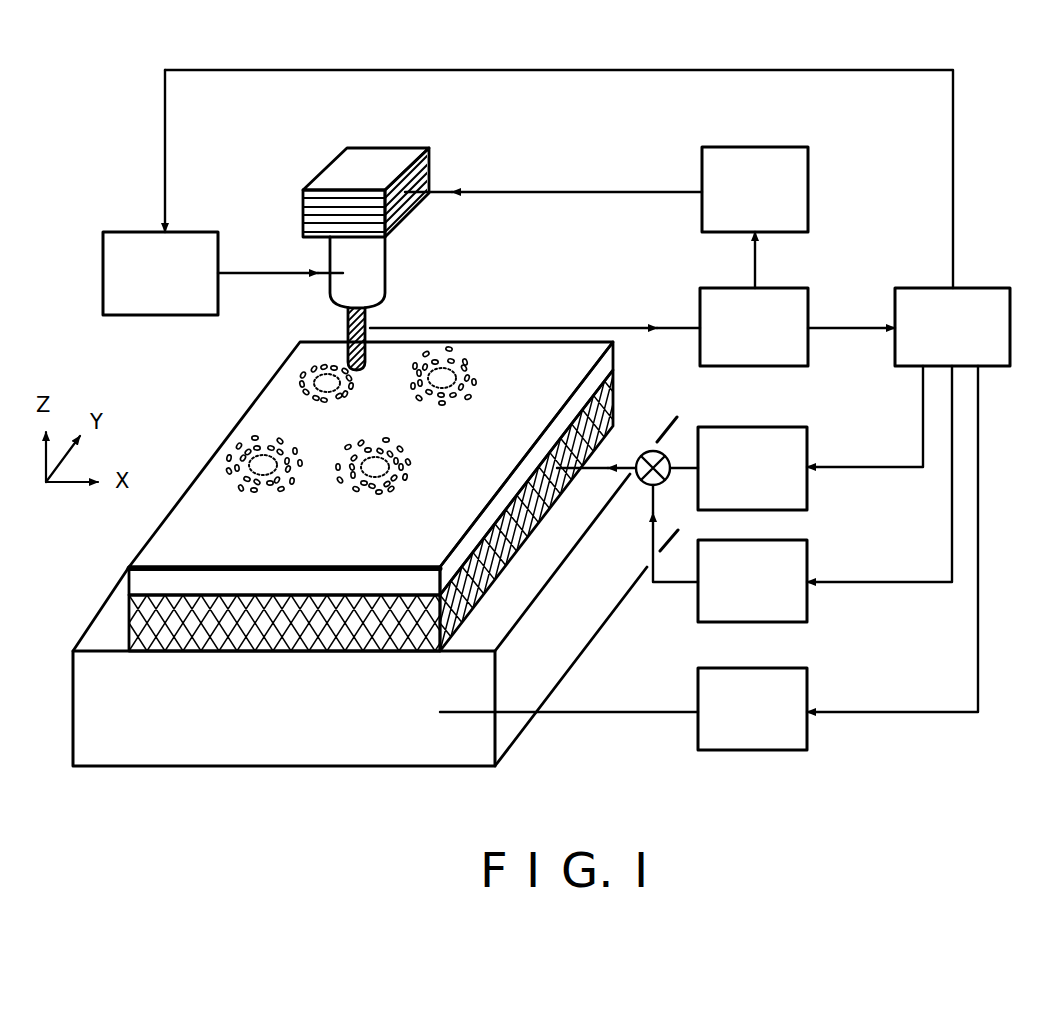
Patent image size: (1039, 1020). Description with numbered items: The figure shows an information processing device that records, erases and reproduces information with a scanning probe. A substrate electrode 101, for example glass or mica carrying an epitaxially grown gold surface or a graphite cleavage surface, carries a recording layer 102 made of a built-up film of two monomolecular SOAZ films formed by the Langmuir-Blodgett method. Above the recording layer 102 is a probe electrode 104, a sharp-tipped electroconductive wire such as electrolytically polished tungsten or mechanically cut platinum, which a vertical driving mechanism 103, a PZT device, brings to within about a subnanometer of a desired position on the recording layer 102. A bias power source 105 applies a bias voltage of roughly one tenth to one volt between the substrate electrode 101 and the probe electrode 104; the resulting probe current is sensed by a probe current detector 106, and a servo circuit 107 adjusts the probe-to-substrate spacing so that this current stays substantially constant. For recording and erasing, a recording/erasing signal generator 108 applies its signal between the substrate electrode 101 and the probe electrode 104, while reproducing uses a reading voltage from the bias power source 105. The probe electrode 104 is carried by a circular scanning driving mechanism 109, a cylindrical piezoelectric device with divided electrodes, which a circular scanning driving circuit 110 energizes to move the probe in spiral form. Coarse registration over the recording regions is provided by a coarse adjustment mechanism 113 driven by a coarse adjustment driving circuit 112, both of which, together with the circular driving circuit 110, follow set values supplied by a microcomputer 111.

The substrate electrode 101 is at (127, 618).
The recording layer 102 is at (127, 582).
The vertical driving mechanism 103 is at (428, 153).
The probe electrode 104 is at (379, 316).
The bias power source 105 is at (748, 427).
The probe current detector 106 is at (775, 288).
The servo circuit 107 is at (757, 147).
The recording/erasing signal generator 108 is at (773, 540).
The circular scanning driving mechanism 109 is at (389, 255).
The circular scanning driving circuit 110 is at (200, 232).
The microcomputer 111 is at (968, 288).
The coarse adjustment driving circuit 112 is at (773, 668).
The coarse adjustment mechanism 113 is at (253, 748).